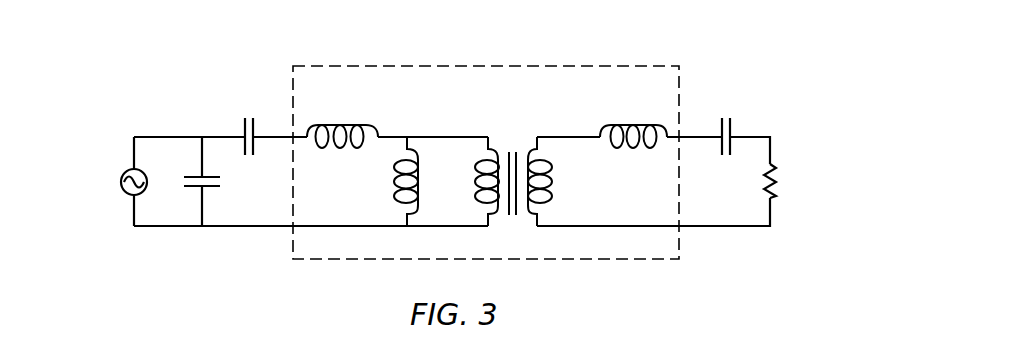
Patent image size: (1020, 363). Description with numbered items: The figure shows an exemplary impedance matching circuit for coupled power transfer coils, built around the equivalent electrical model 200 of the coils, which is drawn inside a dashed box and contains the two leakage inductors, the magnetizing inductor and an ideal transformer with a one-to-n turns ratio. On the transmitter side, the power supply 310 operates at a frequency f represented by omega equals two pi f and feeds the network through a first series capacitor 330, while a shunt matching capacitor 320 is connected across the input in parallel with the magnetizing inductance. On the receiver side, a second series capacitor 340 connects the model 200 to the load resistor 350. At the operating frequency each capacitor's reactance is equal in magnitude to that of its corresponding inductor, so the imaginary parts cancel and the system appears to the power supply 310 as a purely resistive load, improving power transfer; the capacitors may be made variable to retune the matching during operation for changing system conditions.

The power supply 310 is at (117, 208).
The matching capacitor CM 320 is at (184, 165).
The series capacitor C1s 330 is at (237, 119).
The first equivalent electrical model 200 is at (593, 66).
The series capacitor C2s 340 is at (748, 118).
The load resistor R_Load 350 is at (787, 173).